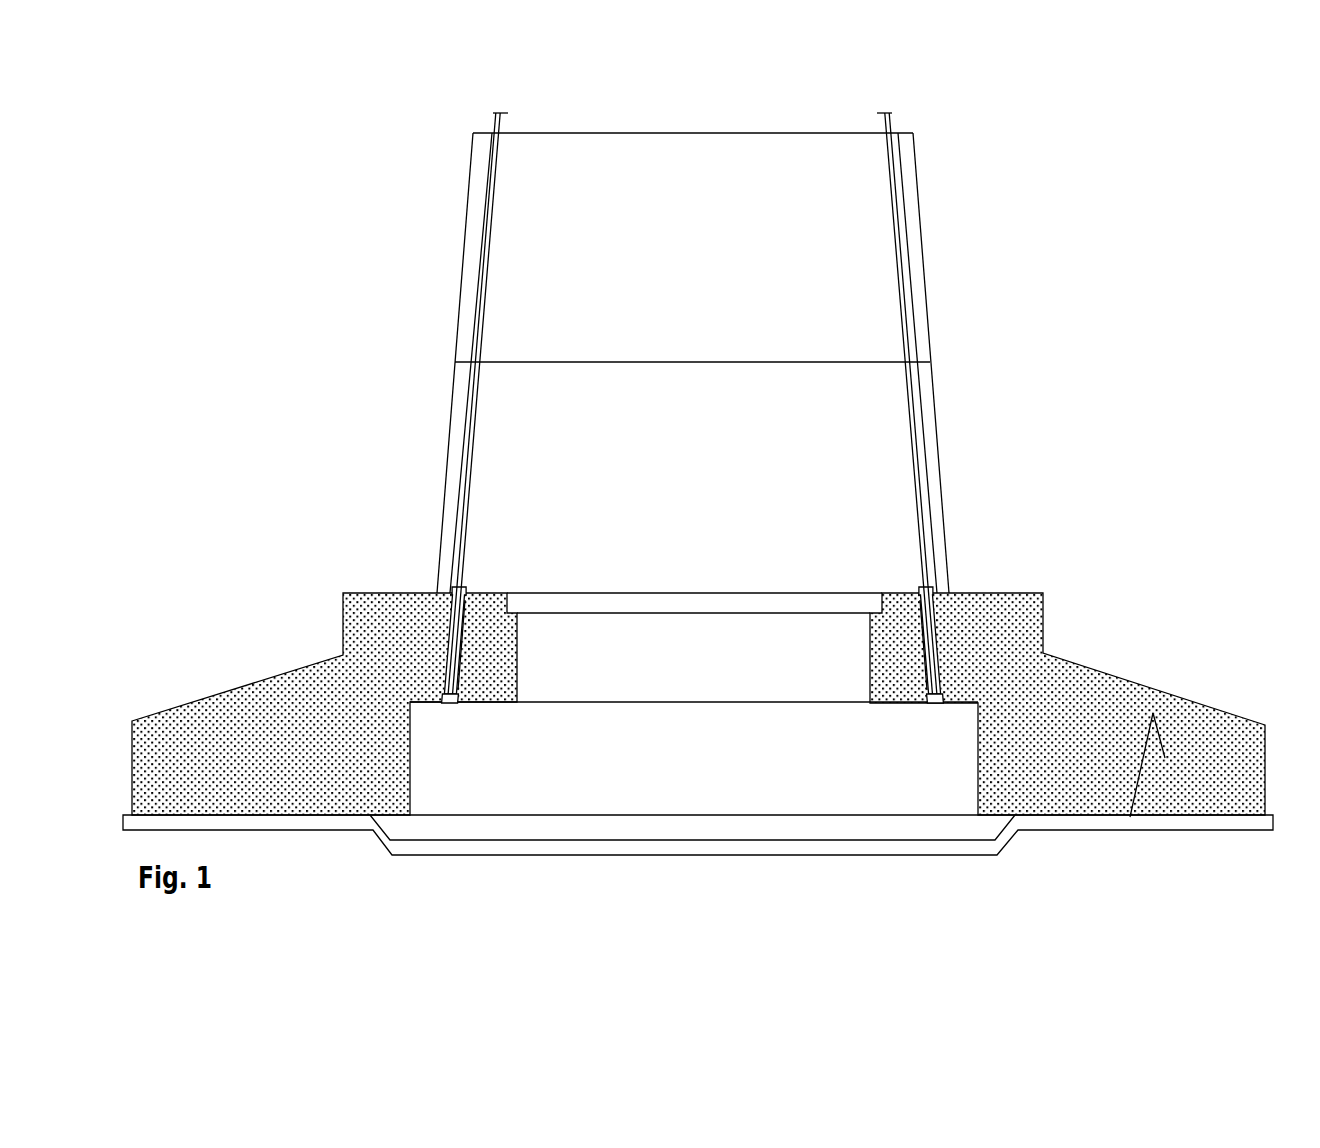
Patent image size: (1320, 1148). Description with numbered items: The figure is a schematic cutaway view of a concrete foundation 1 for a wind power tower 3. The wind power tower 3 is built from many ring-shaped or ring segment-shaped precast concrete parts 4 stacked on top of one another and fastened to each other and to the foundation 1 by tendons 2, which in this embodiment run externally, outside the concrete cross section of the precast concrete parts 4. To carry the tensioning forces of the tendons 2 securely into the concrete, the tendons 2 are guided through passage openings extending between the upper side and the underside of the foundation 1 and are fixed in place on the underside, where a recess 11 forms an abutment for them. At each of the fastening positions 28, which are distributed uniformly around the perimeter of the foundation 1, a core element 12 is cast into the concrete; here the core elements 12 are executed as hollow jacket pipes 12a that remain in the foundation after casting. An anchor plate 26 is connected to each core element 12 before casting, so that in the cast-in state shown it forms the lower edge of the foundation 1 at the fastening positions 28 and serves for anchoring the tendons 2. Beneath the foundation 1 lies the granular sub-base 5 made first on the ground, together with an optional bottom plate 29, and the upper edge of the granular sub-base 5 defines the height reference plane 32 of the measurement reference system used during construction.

The concrete foundation 1 is at (1033, 553).
The tendons 2 is at (897, 258).
The wind power tower 3 is at (928, 288).
The precast concrete parts 4 is at (929, 408).
The granular sub-base 5 is at (252, 823).
The recess 11 is at (880, 722).
The core element 12 is at (450, 633).
The jacket pipe 12a is at (933, 570).
The anchor plate 26 is at (443, 693).
The fastening positions 28 is at (474, 668).
The bottom plate 29 is at (445, 828).
The height reference plane 32 is at (1165, 758).